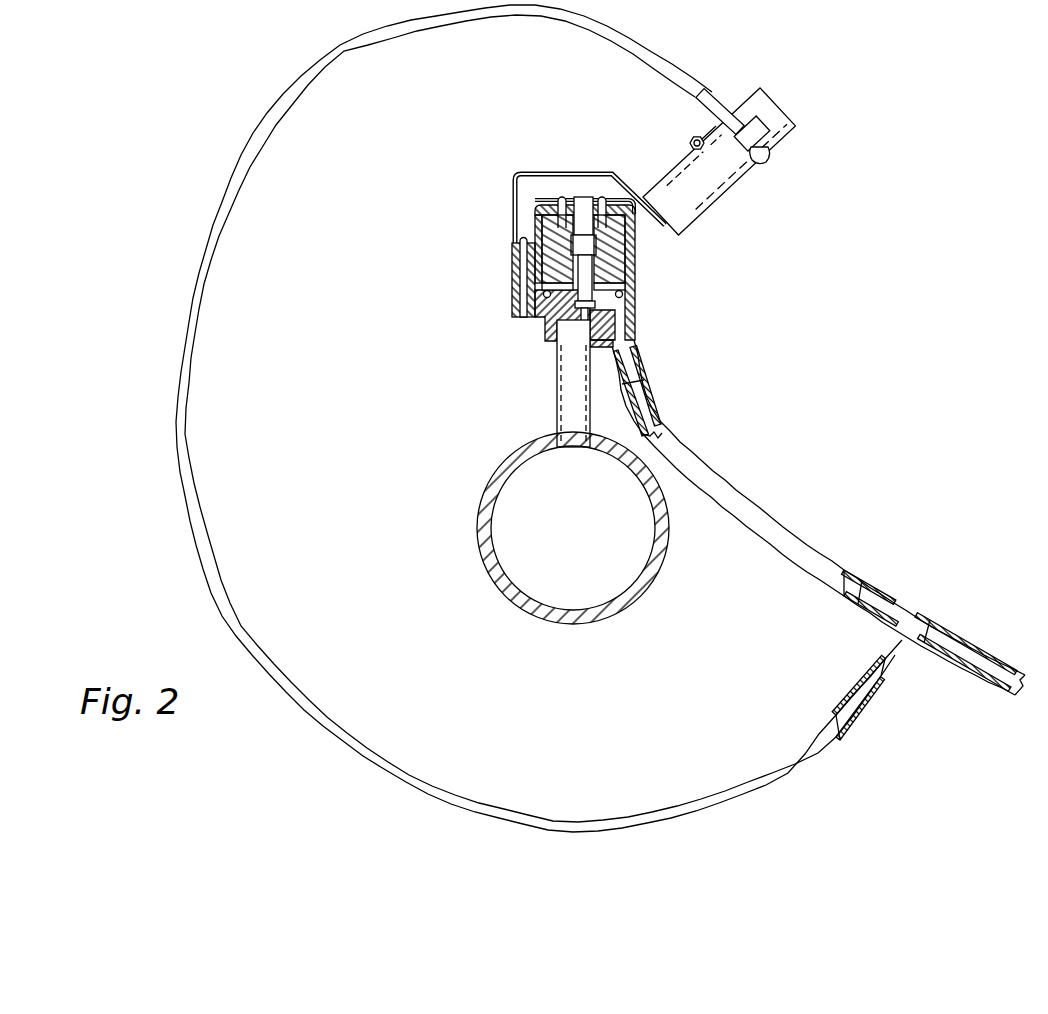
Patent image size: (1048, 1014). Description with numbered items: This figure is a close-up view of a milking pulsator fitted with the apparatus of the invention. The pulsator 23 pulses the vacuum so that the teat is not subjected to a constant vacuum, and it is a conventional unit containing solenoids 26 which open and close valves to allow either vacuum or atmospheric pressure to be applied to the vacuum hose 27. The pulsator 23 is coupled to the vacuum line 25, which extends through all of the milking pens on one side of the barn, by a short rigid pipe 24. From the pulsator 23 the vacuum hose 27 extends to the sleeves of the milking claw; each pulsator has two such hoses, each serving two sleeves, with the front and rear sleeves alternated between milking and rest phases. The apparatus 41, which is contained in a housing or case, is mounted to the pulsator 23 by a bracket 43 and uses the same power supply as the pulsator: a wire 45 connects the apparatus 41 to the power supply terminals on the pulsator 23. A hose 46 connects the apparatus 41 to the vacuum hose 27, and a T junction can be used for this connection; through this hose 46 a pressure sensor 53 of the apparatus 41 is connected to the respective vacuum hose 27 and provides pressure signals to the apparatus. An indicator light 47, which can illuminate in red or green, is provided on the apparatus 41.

The pulsator 23 is at (620, 258).
The short rigid pipe 24 is at (557, 394).
The vacuum line 25 is at (477, 545).
The solenoids 26 is at (548, 262).
The vacuum hose 27 is at (803, 539).
The apparatus 41 is at (742, 101).
The bracket 43 is at (607, 200).
The wire 45 is at (559, 173).
The hose 46 is at (272, 118).
The indicator light 47 is at (767, 165).
The pressure sensor 53 is at (773, 114).